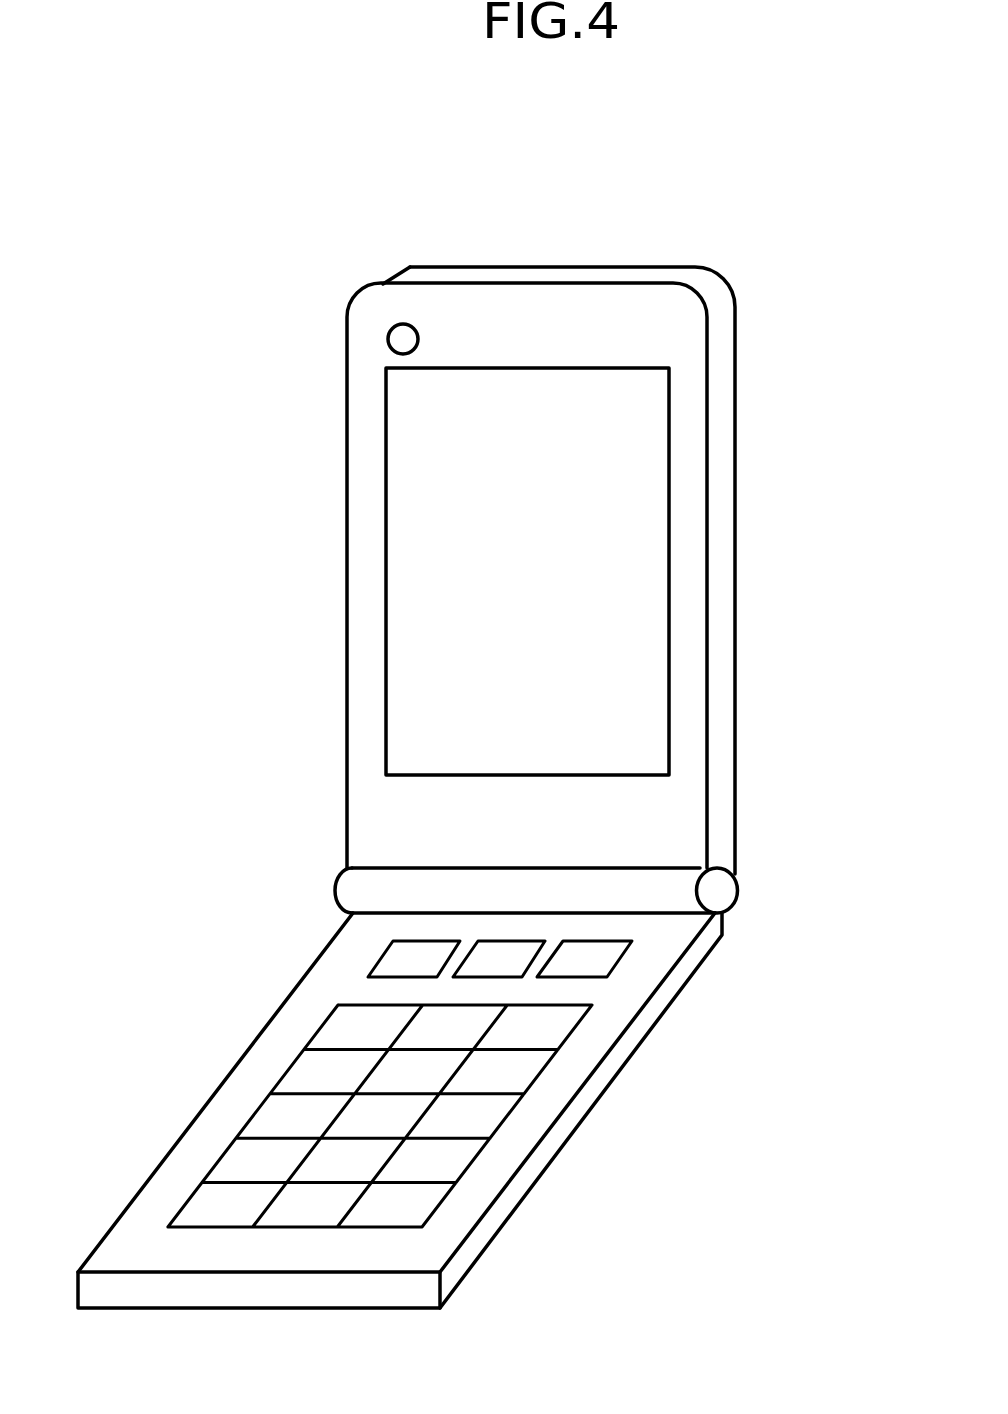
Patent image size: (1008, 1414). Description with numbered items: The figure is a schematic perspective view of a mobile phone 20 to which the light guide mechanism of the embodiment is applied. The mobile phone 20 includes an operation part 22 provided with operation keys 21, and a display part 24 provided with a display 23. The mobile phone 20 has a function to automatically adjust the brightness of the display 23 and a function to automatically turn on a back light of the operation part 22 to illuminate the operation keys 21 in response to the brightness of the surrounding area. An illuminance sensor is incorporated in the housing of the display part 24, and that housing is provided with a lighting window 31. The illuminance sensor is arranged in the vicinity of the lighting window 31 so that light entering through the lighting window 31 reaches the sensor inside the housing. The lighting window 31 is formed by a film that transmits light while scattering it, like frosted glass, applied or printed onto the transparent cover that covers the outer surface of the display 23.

The mobile phone 20 is at (484, 200).
The operation keys 21 is at (523, 1070).
The operation part 22 is at (540, 1198).
The display 23 is at (602, 527).
The display part 24 is at (742, 420).
The lighting window 31 is at (400, 340).